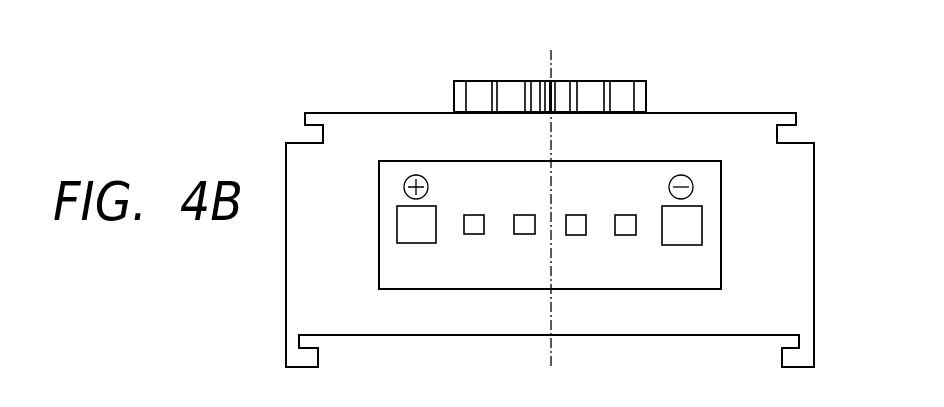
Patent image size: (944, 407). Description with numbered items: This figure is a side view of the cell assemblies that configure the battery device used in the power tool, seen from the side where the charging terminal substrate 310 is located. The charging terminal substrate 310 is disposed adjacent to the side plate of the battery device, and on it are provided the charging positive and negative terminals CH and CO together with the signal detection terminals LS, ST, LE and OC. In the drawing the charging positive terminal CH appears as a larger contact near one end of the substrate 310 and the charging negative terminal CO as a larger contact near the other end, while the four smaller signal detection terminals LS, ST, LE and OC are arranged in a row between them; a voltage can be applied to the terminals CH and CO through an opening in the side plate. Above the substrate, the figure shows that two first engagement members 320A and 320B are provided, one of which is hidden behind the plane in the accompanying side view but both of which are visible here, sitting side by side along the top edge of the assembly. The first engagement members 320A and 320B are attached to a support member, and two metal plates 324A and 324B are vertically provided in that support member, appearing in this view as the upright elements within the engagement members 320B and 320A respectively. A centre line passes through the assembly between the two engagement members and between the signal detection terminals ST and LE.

The charging terminal substrate 310 is at (398, 277).
The first engagement member 320A is at (643, 92).
The first engagement member 320B is at (458, 92).
The metal plate 324A is at (609, 80).
The metal plate 324B is at (492, 80).
The signal detection terminal ST is at (547, 80).
The charging positive terminal CH is at (397, 240).
The charging negative terminal CO is at (702, 236).
The signal detection terminal LS is at (470, 234).
The signal detection terminal LE is at (573, 235).
The signal detection terminal OC is at (626, 235).